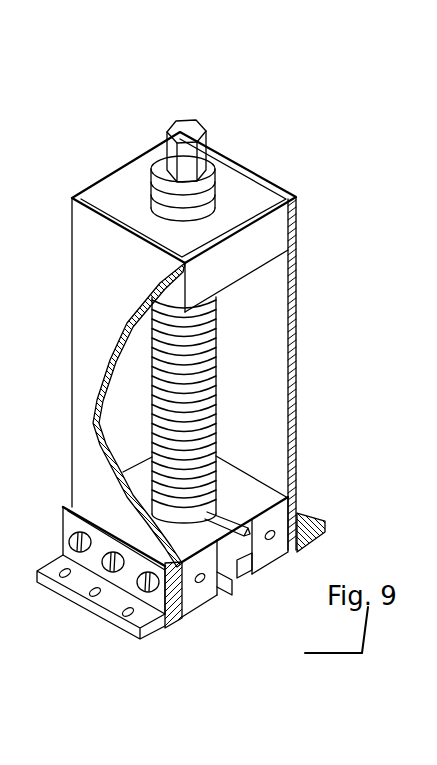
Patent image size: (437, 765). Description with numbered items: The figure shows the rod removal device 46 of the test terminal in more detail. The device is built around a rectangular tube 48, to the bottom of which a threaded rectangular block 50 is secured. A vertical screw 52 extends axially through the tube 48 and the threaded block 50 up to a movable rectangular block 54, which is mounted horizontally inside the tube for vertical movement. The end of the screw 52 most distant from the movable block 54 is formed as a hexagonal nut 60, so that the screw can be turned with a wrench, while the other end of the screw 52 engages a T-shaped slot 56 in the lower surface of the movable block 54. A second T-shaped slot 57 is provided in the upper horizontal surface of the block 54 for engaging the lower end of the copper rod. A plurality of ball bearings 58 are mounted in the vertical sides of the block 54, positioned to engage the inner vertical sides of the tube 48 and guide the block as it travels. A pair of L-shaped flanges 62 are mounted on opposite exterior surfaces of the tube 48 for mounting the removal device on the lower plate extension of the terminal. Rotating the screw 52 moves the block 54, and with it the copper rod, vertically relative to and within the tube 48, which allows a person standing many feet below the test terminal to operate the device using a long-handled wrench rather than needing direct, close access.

The rod removal device 46 is at (302, 372).
The rectangular tube 48 is at (286, 256).
The threaded rectangular block 50 is at (237, 178).
The vertical screw 52 is at (218, 341).
The movable rectangular block 54 is at (275, 556).
The T-shaped slot 56 is at (248, 533).
The second T-shaped slot 57 is at (244, 569).
The ball bearings 58 is at (277, 532).
The hexagonal nut 60 is at (192, 125).
The L-shaped flanges 62 is at (112, 621).